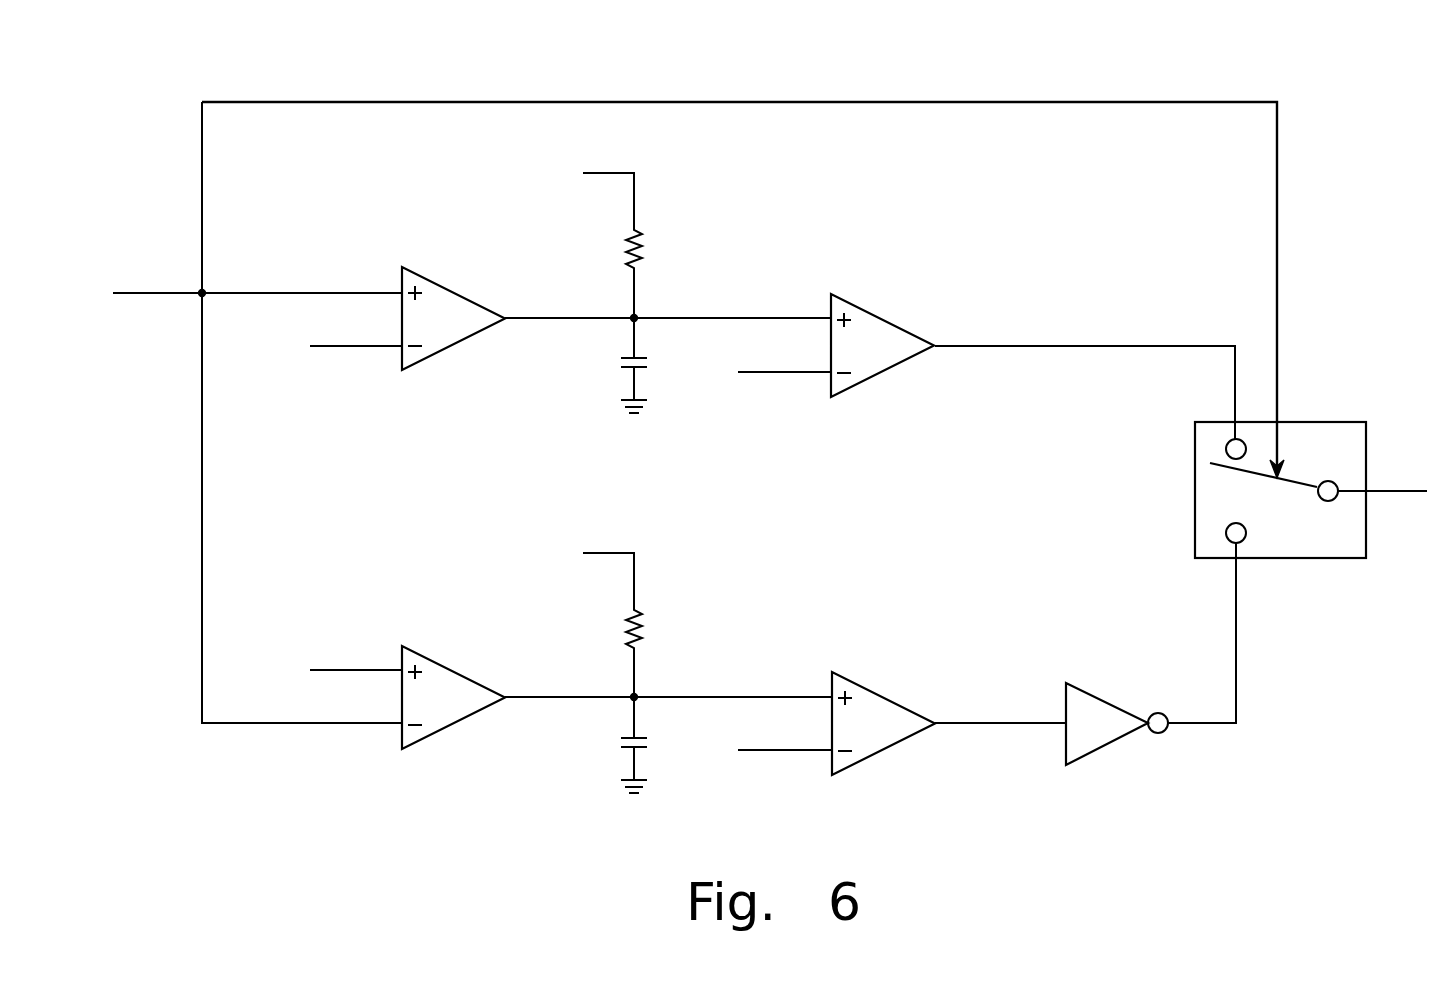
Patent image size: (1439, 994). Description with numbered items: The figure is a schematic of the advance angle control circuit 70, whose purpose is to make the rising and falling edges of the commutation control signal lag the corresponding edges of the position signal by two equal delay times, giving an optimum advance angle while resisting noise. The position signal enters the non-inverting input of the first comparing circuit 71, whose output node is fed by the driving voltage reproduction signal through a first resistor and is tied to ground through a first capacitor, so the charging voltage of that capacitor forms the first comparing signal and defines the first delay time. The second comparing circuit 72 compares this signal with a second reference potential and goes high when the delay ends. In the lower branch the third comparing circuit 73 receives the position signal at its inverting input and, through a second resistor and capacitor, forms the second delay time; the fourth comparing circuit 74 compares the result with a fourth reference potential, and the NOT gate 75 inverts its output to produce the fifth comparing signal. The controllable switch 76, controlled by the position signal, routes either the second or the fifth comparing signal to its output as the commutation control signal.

The advance angle control circuit 70 is at (835, 58).
The first comparing circuit 71 is at (453, 289).
The second comparing circuit 72 is at (867, 308).
The third comparing circuit 73 is at (453, 668).
The fourth comparing circuit 74 is at (865, 688).
The inverter 75 is at (1095, 695).
The controllable switch 76 is at (1297, 422).